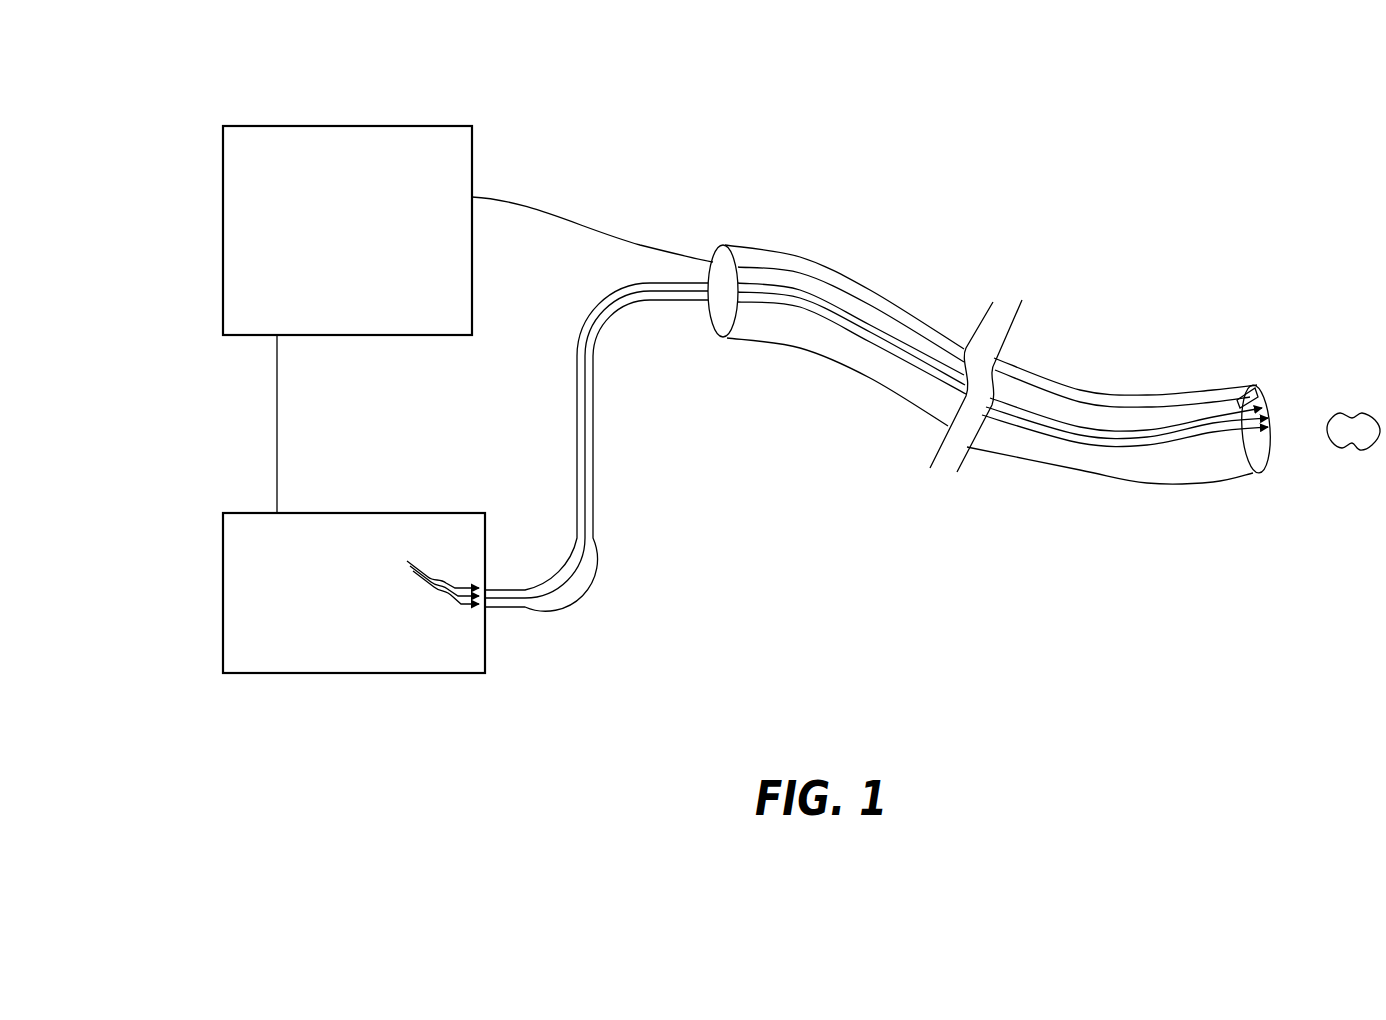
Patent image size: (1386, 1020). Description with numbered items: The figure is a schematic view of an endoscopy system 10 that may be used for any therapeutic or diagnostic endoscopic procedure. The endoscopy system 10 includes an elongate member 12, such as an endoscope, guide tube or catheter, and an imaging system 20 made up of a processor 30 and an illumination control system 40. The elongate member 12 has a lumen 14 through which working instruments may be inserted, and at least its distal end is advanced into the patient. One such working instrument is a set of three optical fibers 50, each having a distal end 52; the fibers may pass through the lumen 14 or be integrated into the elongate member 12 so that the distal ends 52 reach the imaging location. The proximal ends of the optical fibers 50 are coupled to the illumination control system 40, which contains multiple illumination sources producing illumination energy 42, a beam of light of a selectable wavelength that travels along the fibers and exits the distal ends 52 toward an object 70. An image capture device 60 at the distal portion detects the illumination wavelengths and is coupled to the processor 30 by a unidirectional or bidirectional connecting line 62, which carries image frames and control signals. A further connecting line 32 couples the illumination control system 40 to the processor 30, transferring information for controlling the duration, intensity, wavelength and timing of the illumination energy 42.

The endoscopy system 10 is at (1022, 299).
The elongate member 12 is at (787, 252).
The lumen 14 is at (1262, 456).
The imaging system 20 is at (651, 205).
The processor 30 is at (403, 126).
The connecting line 32 is at (277, 402).
The illumination control system 40 is at (382, 513).
The illumination energy 42 is at (431, 570).
The optical fibers 50 is at (577, 440).
The distal ends 52 is at (1270, 427).
The image capture device 60 is at (1253, 392).
The connecting line 62 is at (541, 206).
The object 70 is at (1353, 455).